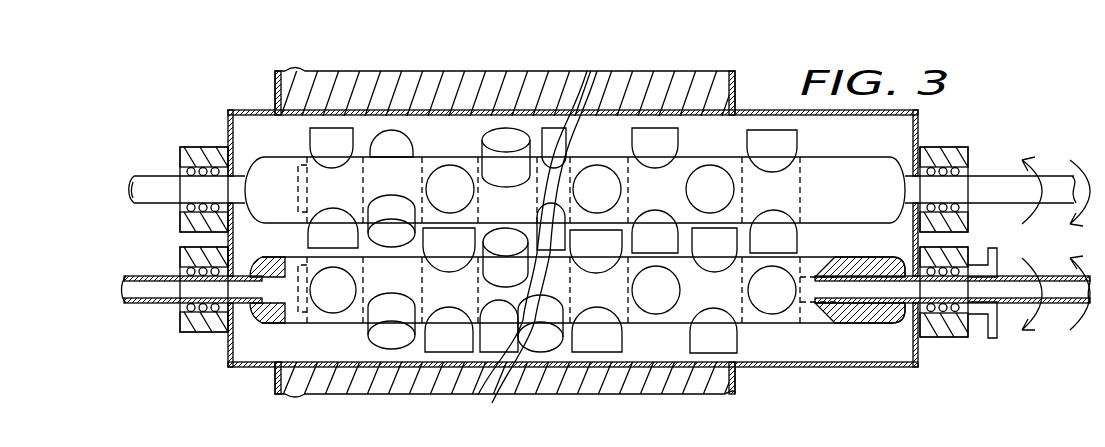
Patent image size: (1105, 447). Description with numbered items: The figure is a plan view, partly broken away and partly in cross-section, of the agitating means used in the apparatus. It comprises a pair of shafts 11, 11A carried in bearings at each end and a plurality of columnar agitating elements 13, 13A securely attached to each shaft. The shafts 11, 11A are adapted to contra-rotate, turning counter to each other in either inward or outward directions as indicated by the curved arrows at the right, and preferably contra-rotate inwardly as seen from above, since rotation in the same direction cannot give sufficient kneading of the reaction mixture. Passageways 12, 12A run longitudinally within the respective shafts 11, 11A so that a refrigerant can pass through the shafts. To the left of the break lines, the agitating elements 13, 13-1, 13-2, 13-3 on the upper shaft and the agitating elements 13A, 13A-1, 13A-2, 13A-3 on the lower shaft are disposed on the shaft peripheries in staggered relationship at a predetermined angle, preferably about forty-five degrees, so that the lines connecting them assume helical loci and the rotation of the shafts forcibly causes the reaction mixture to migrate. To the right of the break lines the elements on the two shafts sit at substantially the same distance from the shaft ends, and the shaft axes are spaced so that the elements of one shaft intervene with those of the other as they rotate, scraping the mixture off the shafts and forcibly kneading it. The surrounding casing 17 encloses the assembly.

The shaft 11 is at (156, 178).
The passageway 12 is at (132, 188).
The shaft 11A is at (146, 305).
The passageway 12A is at (120, 290).
The agitating element 13 is at (340, 128).
The agitating element 13-1 is at (452, 167).
The agitating element 13-2 is at (517, 130).
The agitating element 13-3 is at (530, 125).
The agitating element 13A is at (330, 314).
The agitating element 13A-1 is at (385, 349).
The agitating element 13A-2 is at (446, 352).
The agitating element 13A-3 is at (502, 278).
The casing 17 is at (573, 258).